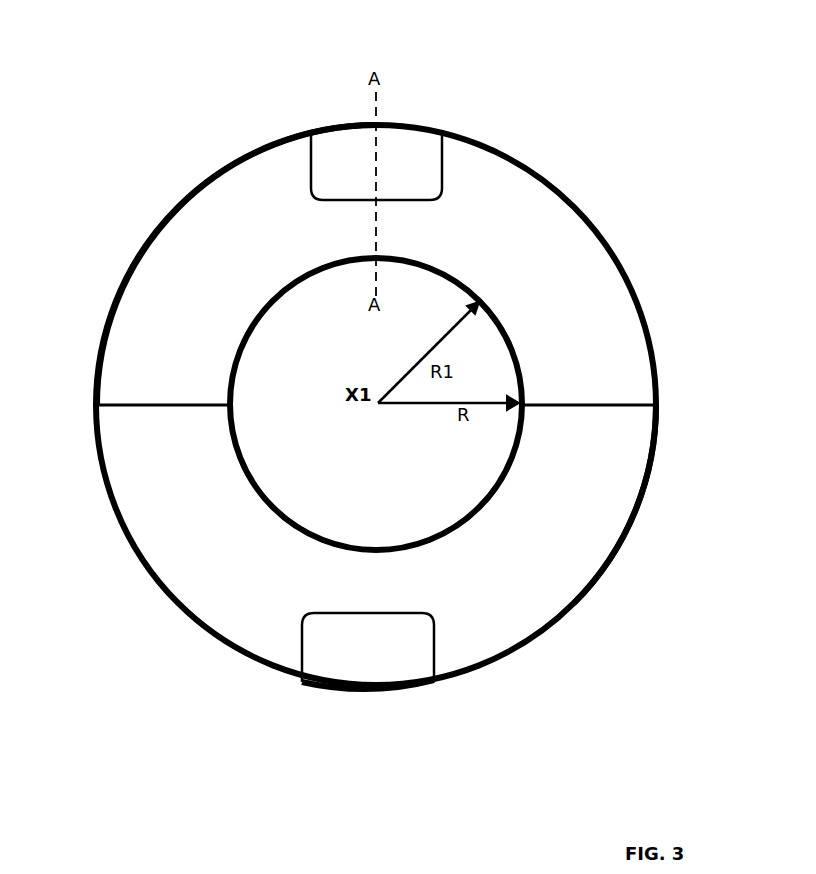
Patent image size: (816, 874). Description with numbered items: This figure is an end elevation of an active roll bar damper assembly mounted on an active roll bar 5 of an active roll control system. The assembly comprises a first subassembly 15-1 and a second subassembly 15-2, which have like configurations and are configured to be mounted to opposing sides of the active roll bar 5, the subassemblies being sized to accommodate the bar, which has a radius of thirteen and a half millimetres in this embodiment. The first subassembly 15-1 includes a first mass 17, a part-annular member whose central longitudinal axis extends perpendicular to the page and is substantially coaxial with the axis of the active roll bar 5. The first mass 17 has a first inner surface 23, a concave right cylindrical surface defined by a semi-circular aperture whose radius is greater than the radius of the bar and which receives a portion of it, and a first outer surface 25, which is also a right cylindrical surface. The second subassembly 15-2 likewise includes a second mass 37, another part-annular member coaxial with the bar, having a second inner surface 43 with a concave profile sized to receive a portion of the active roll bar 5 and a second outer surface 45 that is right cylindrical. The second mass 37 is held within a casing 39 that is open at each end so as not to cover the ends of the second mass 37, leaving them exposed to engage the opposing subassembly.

The first subassembly 15-1 is at (572, 181).
The second subassembly 15-2 is at (607, 590).
The first mass 17 is at (352, 132).
The first inner surface 23 is at (295, 280).
The first outer surface 25 is at (193, 188).
The second mass 37 is at (360, 657).
The casing 39 is at (267, 637).
The second inner surface 43 is at (433, 540).
The second outer surface 45 is at (153, 568).
The active roll bar 5 is at (330, 450).